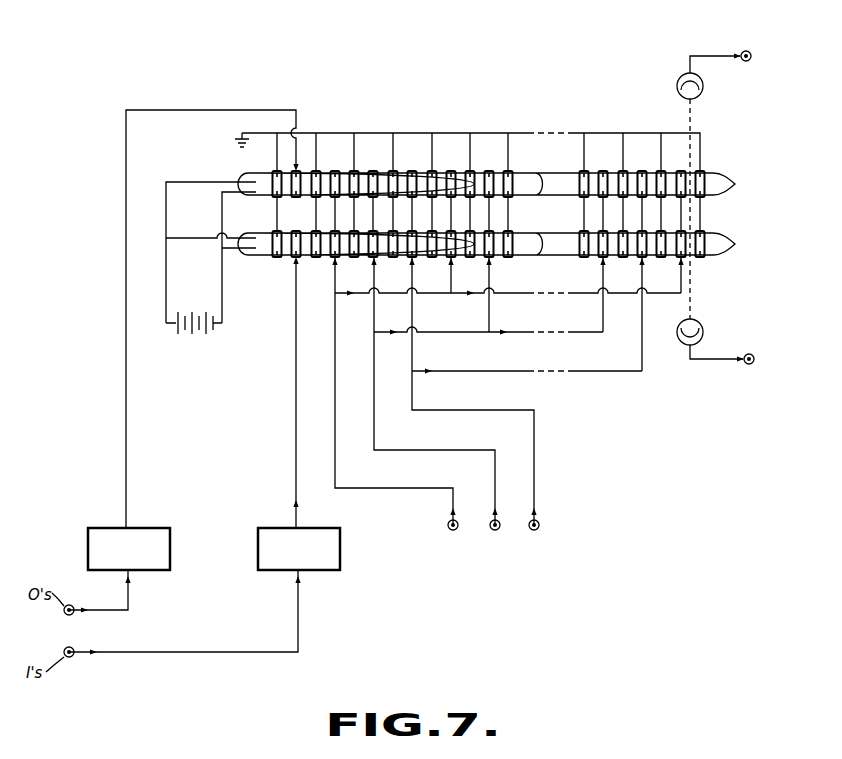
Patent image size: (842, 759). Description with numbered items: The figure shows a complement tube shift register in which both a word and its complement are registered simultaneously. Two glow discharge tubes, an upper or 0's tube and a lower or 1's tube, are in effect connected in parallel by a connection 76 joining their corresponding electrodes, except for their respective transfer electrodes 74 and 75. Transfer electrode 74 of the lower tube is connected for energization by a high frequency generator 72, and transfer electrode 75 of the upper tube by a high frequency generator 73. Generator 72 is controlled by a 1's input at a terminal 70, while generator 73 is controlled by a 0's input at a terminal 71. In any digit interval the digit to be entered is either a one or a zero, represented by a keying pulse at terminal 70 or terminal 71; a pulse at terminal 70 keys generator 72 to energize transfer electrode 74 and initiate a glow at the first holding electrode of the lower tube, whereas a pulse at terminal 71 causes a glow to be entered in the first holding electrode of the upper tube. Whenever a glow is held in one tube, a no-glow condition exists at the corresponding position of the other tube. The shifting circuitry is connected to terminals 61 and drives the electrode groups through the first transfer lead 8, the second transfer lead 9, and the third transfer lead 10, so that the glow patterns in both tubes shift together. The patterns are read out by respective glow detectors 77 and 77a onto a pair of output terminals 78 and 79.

The 1's input terminal 70 is at (73, 658).
The 0's input terminal 71 is at (74, 606).
The high frequency generator 72 is at (258, 544).
The high frequency generator 73 is at (88, 544).
The transfer electrode 74 is at (291, 263).
The transfer electrode 75 is at (300, 170).
The connection 76 is at (509, 213).
The glow detector 77 is at (703, 86).
The glow detector 77a is at (704, 332).
The output terminal 78 is at (749, 51).
The output terminal 79 is at (752, 364).
The first transfer lead 8 is at (496, 497).
The second transfer lead 9 is at (536, 497).
The third transfer lead 10 is at (455, 497).
The terminals 61 is at (554, 551).